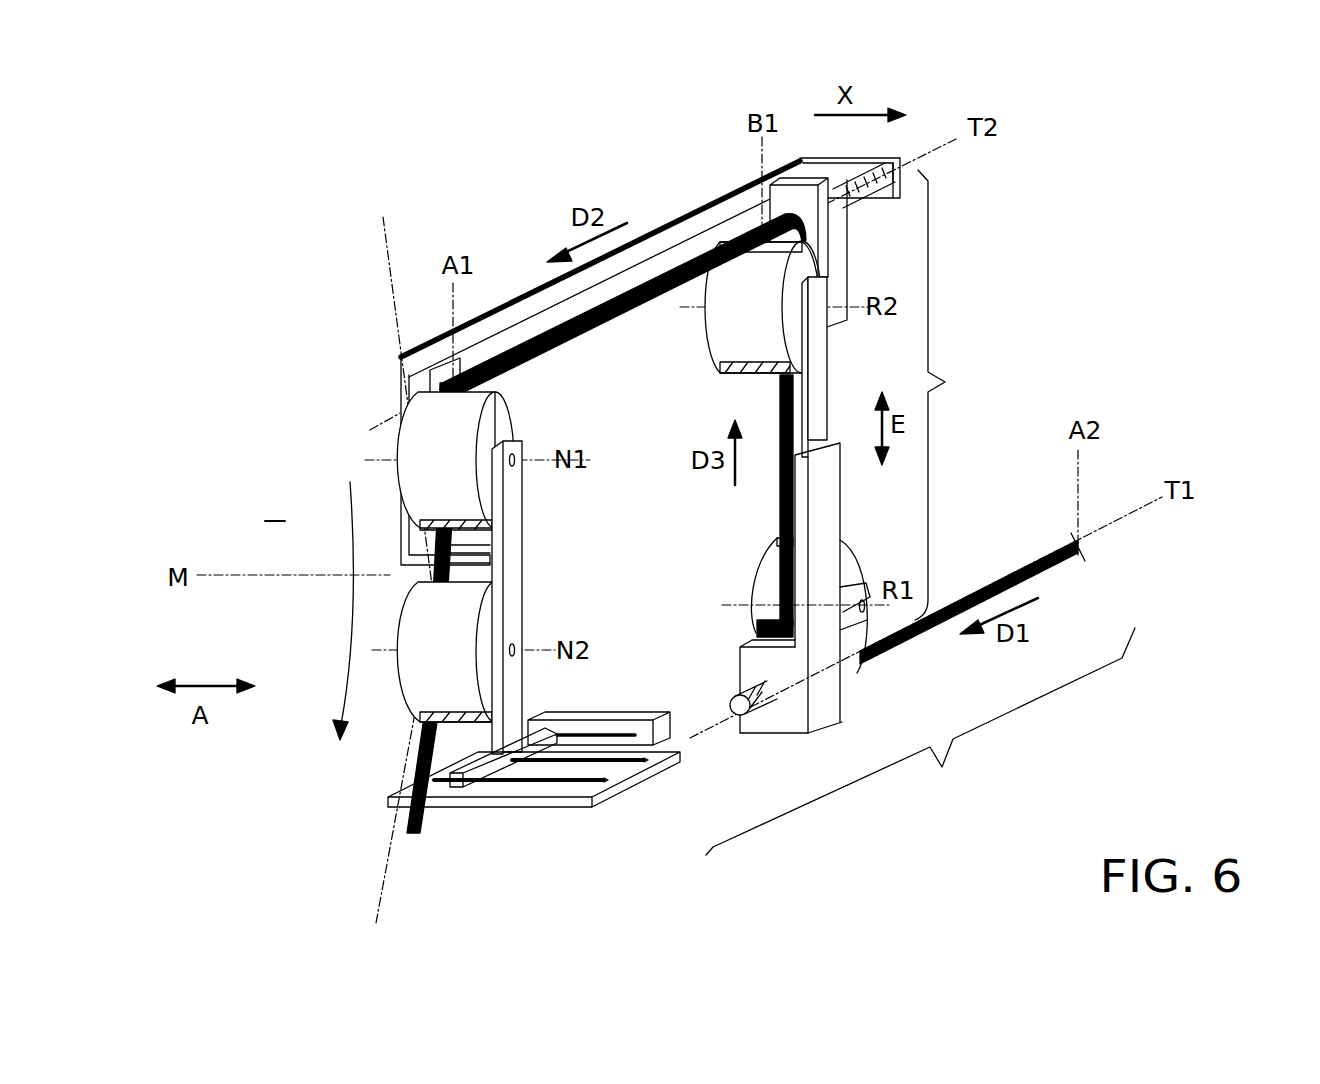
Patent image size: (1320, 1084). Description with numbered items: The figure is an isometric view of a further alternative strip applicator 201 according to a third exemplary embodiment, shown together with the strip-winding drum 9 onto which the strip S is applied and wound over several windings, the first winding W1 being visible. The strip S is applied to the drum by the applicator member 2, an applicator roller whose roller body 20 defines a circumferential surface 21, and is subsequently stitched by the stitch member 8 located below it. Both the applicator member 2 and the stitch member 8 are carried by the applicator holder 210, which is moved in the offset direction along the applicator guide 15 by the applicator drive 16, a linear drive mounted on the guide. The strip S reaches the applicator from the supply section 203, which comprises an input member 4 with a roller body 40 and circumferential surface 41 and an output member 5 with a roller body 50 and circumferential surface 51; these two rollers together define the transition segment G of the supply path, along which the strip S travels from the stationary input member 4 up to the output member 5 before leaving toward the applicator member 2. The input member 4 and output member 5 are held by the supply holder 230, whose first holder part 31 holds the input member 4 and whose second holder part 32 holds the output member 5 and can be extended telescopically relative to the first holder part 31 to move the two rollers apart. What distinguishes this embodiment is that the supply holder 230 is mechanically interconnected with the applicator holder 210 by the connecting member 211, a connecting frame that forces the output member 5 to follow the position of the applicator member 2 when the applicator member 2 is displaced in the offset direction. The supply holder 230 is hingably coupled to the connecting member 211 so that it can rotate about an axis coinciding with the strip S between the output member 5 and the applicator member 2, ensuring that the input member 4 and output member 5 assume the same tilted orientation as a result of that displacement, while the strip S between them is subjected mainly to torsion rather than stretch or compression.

The strip applicator 201 is at (608, 172).
The connecting member 211 is at (663, 242).
The strip S is at (1010, 570).
The output member 5 is at (707, 337).
The roller body 50 is at (717, 355).
The circumferential surface 51 is at (834, 262).
The supply holder 230 is at (840, 265).
The second holder part 32 is at (820, 367).
The first holder part 31 is at (832, 520).
The input member 4 is at (763, 577).
The roller body 40 is at (763, 597).
The circumferential surface 41 is at (872, 565).
The applicator member 2 is at (503, 420).
The circumferential surface 21 is at (400, 462).
The roller body 20 is at (420, 493).
The stitch member 8 is at (410, 693).
The applicator holder 210 is at (512, 558).
The applicator guide 15 is at (637, 765).
The applicator drive 16 is at (630, 713).
The first winding W1 is at (424, 828).
The strip-winding drum 9 is at (309, 611).
The supply section 203 is at (920, 741).
The transition segment G is at (949, 395).